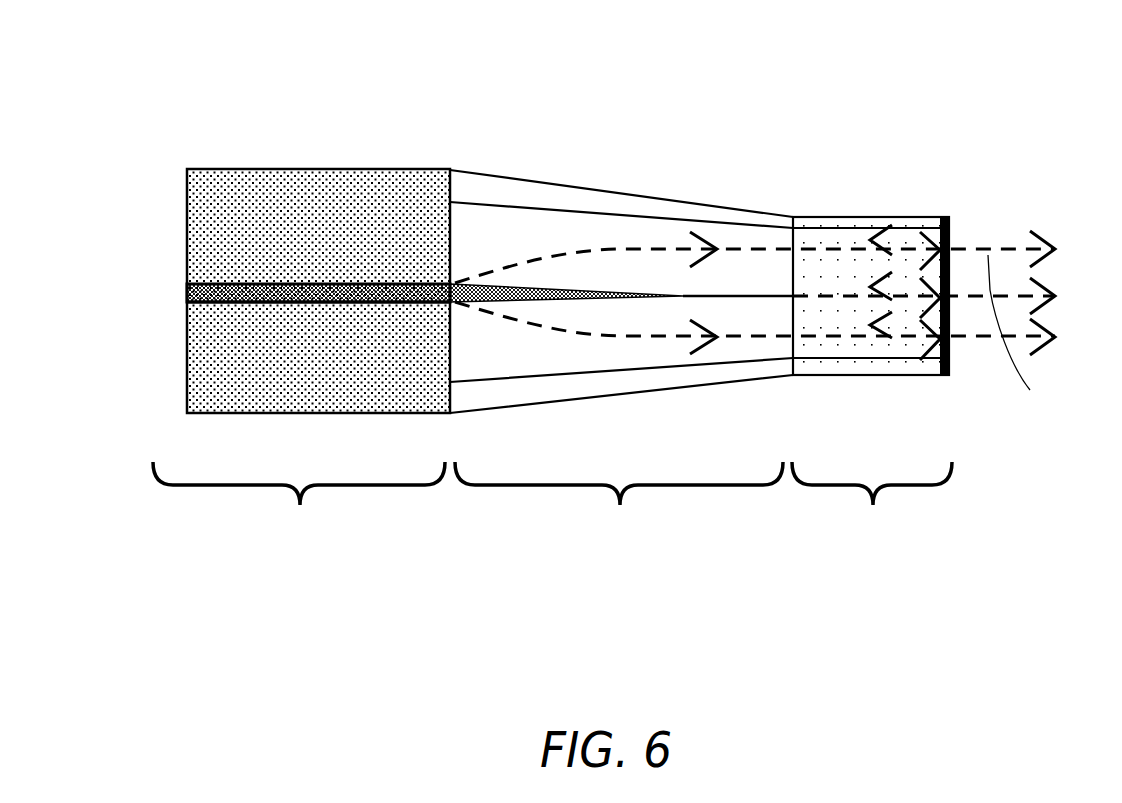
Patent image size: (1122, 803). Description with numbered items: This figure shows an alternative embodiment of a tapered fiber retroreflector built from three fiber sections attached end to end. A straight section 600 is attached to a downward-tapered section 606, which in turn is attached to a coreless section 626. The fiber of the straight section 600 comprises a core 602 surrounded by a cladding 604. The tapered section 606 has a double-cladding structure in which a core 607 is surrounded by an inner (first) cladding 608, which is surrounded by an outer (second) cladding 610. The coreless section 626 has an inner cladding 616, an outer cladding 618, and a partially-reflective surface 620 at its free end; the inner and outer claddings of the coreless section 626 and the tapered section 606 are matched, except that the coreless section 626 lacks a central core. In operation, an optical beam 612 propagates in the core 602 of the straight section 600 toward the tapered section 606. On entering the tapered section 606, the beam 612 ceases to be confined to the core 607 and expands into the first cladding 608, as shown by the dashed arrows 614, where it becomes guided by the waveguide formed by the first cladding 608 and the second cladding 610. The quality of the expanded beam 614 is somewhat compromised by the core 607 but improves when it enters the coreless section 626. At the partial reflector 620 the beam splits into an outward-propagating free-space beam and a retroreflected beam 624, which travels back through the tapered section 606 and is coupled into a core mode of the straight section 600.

The straight section 600 is at (269, 312).
The core 602 is at (220, 283).
The cladding 604 is at (307, 170).
The downward-tapered section 606 is at (735, 312).
The core 607 is at (605, 300).
The inner (first) cladding 608 is at (602, 213).
The outer (second) cladding 610 is at (513, 178).
The optical beam 612 is at (400, 302).
The expanded beam 614 is at (653, 336).
The inner cladding 616 is at (862, 228).
The outer cladding 618 is at (818, 215).
The partially-reflective surface 620 is at (946, 217).
The retroreflected beam 624 is at (900, 287).
The coreless section 626 is at (934, 303).